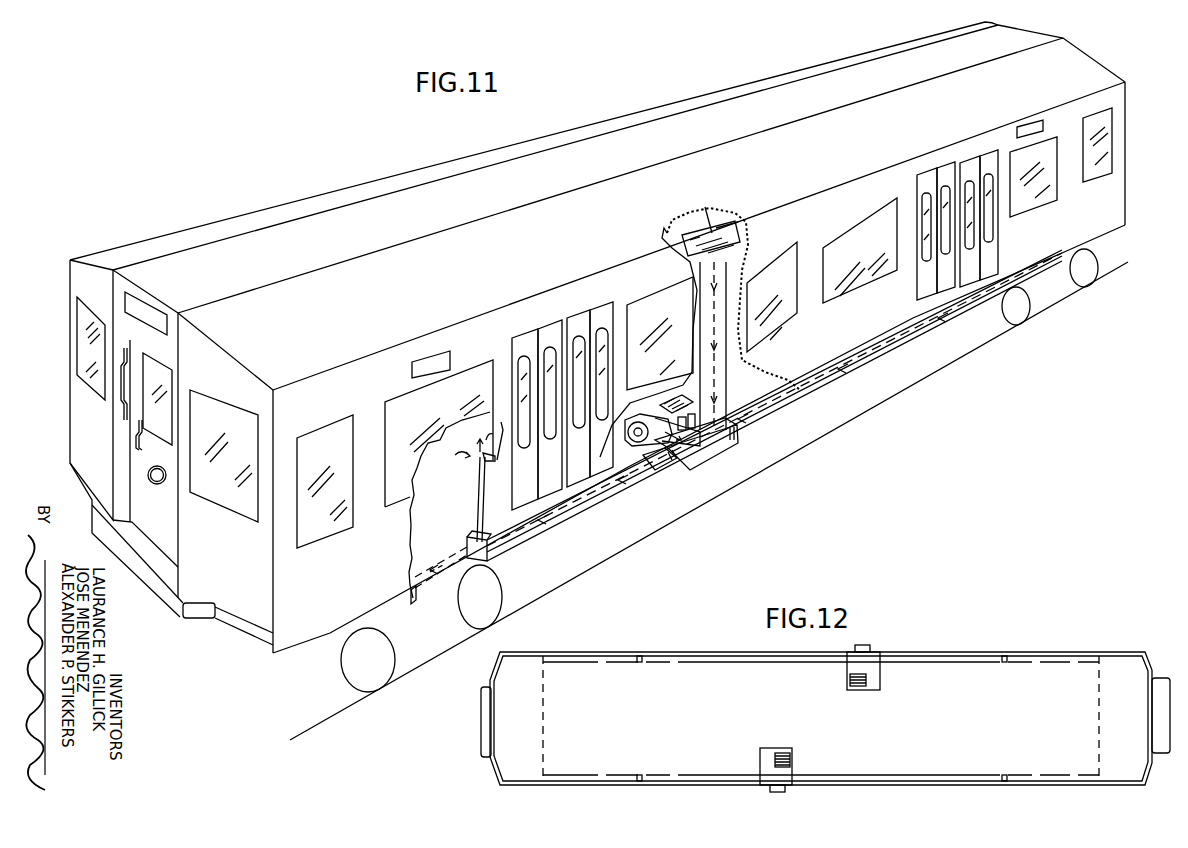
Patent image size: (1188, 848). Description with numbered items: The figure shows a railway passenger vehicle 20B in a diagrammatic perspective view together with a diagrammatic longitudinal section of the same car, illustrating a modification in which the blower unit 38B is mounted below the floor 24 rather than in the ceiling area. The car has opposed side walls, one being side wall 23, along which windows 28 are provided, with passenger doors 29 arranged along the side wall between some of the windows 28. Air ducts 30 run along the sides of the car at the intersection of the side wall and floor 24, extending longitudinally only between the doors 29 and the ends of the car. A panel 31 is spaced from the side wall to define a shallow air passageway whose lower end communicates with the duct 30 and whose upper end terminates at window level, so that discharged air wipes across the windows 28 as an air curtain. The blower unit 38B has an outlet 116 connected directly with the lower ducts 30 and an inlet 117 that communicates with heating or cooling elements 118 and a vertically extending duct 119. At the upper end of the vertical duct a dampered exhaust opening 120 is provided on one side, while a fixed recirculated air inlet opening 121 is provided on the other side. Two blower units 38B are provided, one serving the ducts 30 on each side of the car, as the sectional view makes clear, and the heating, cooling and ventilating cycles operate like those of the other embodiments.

In FIG. 11, the vehicle 20B is at (834, 62).
In FIG. 12, the vehicle 20B is at (1081, 648).
In FIG. 11, the side wall 23 is at (491, 503).
In FIG. 11, the floor 24 is at (430, 547).
In FIG. 11, the windows 28 is at (800, 313).
In FIG. 11, the passenger doors 29 is at (942, 298).
In FIG. 11, the air ducts 30 is at (582, 498).
In FIG. 11, the panel 31 is at (477, 507).
In FIG. 11, the blower unit 38B is at (653, 463).
In FIG. 12, the blower unit 38B is at (768, 748).
In FIG. 11, the outlet 116 is at (708, 462).
In FIG. 11, the inlet 117 is at (737, 440).
In FIG. 11, the heating or cooling elements 118 is at (677, 405).
In FIG. 11, the vertically extending duct 119 is at (745, 357).
In FIG. 11, the dampered exhaust opening 120 is at (738, 252).
In FIG. 11, the fixed recirculated air inlet opening 121 is at (688, 240).